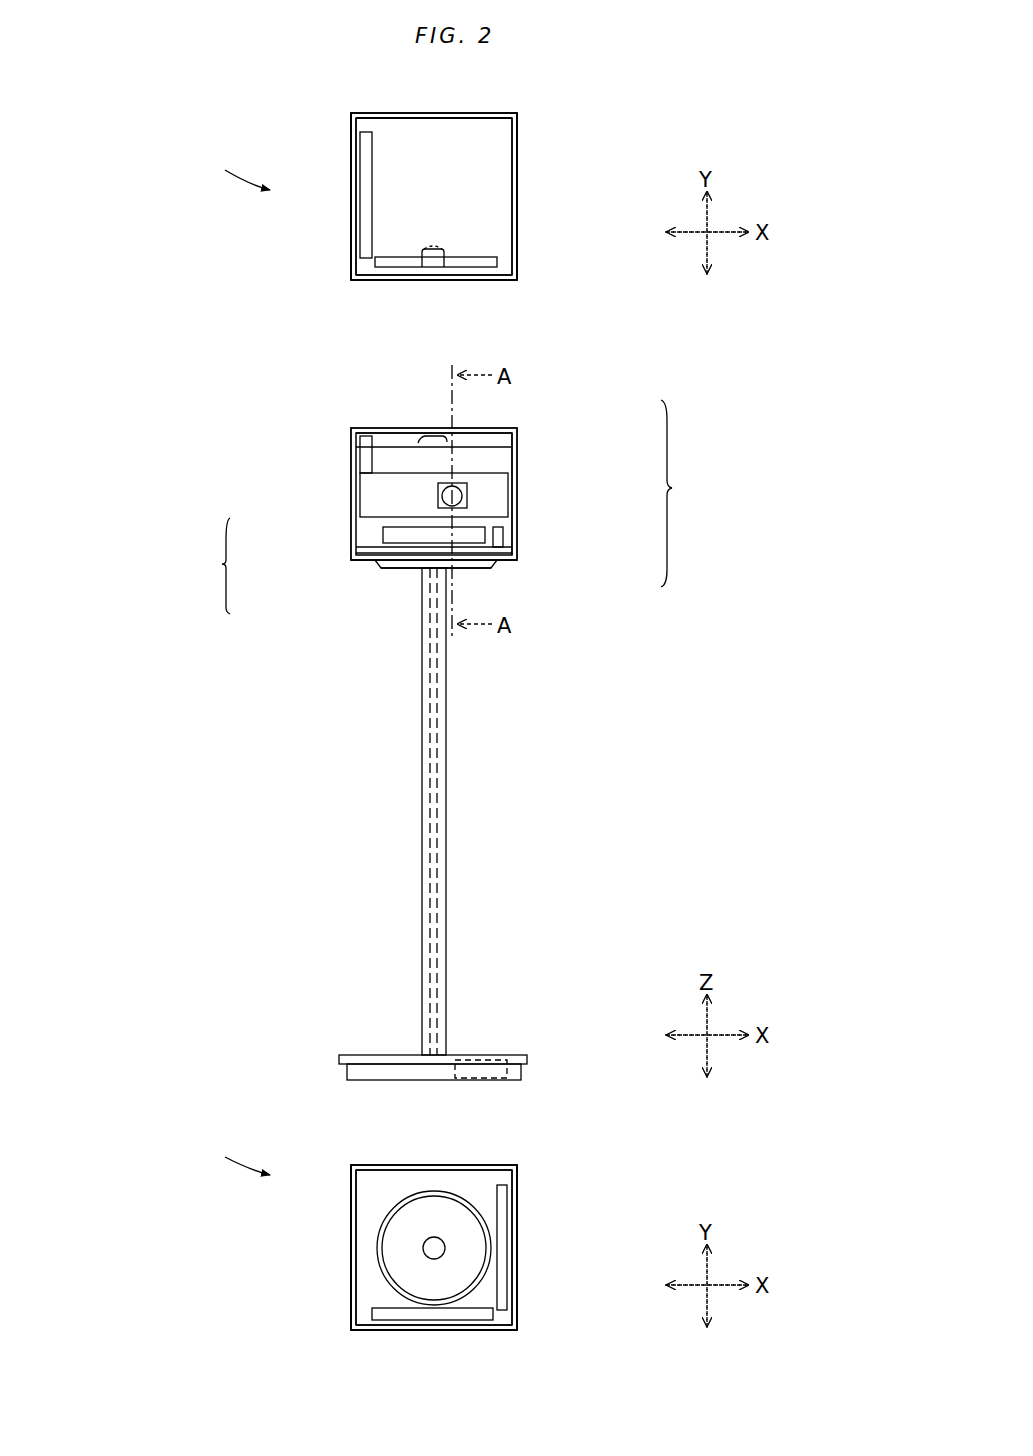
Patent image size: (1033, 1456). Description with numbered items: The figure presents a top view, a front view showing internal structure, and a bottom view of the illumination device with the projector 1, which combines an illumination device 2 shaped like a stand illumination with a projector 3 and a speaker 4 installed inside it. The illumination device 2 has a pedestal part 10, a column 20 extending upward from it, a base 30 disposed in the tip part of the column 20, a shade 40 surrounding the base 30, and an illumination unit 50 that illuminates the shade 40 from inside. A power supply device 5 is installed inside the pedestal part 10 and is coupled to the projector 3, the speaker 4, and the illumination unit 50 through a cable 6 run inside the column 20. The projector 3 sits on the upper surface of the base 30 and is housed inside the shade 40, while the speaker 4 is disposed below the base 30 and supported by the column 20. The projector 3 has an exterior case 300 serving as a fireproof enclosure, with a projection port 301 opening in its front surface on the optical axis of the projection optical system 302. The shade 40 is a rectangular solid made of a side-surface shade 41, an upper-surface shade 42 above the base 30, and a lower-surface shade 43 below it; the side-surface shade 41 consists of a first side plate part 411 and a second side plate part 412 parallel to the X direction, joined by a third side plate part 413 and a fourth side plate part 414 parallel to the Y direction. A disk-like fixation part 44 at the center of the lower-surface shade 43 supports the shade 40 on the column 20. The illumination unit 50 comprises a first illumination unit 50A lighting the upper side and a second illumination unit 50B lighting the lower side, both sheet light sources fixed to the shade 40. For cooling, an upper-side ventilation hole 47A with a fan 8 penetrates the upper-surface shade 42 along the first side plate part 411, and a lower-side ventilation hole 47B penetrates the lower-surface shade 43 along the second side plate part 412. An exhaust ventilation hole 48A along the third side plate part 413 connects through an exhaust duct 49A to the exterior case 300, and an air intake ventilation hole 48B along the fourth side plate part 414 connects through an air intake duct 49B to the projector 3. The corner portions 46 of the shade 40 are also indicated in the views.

The illumination device with the projector 1 is at (237, 667).
The illumination device 2 is at (520, 125).
The projector 3 is at (348, 505).
The speaker 4 is at (348, 530).
The power supply device 5 is at (488, 1058).
The cable 6 is at (447, 908).
The fan 8 is at (448, 262).
The pedestal part 10 is at (365, 1055).
The column 20 is at (447, 765).
The base 30 is at (490, 530).
The shade 40 is at (348, 265).
The side-surface shade 41 is at (518, 175).
The upper-surface shade 42 is at (430, 118).
The lower-surface shade 43 is at (378, 563).
The fixation part 44 is at (405, 570).
The corner portion 46 is at (378, 113).
The upper-side ventilation hole 47A is at (390, 262).
The lower-side ventilation hole 47B is at (390, 1312).
The exhaust ventilation hole 48A is at (360, 165).
The air intake ventilation hole 48B is at (508, 1250).
The exhaust duct 49A is at (380, 447).
The air intake duct 49B is at (498, 548).
The illumination unit 50 is at (683, 493).
The first illumination unit 50A is at (517, 438).
The second illumination unit 50B is at (517, 560).
The exterior case 300 is at (360, 492).
The projection port 301 is at (470, 488).
The projection optical system 302 is at (465, 495).
The first side plate part 411 is at (478, 275).
The second side plate part 412 is at (482, 115).
The third side plate part 413 is at (352, 210).
The fourth side plate part 414 is at (518, 218).